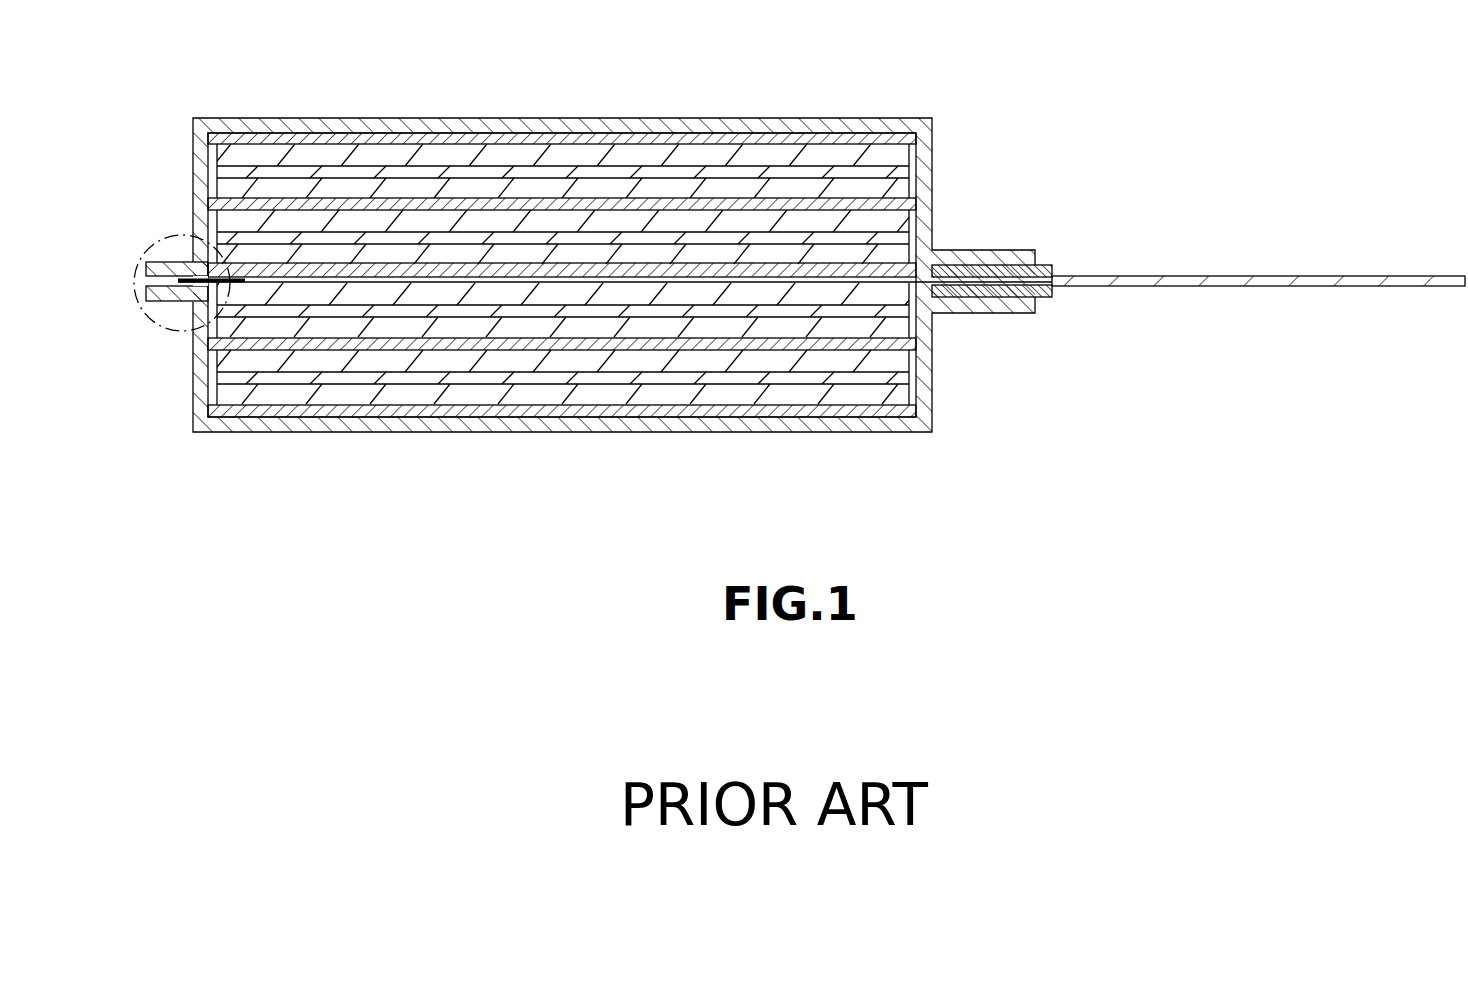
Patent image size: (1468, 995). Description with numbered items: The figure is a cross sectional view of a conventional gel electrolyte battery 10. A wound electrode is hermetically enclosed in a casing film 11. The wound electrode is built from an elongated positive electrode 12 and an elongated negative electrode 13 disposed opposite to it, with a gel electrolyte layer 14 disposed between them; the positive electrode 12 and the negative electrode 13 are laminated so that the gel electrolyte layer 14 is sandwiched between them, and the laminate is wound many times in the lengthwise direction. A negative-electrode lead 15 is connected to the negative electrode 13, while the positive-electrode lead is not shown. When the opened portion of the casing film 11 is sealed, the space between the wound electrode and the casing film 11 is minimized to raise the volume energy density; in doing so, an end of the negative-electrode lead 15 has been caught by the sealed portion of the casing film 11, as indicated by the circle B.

The gel electrolyte battery 10 is at (799, 230).
The casing film 11 is at (810, 118).
The positive electrode 12 is at (365, 170).
The negative electrode 13 is at (505, 140).
The gel electrolyte layer 14 is at (428, 155).
The negative-electrode lead 15 is at (1317, 277).
The circle B is at (165, 234).